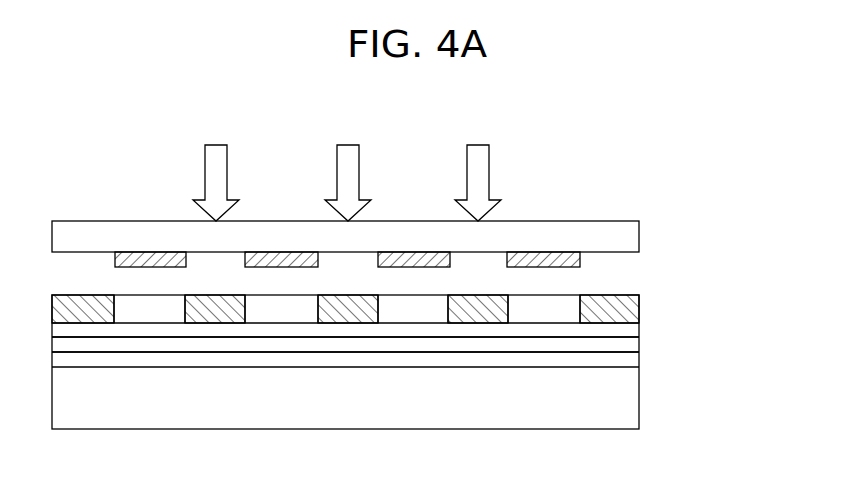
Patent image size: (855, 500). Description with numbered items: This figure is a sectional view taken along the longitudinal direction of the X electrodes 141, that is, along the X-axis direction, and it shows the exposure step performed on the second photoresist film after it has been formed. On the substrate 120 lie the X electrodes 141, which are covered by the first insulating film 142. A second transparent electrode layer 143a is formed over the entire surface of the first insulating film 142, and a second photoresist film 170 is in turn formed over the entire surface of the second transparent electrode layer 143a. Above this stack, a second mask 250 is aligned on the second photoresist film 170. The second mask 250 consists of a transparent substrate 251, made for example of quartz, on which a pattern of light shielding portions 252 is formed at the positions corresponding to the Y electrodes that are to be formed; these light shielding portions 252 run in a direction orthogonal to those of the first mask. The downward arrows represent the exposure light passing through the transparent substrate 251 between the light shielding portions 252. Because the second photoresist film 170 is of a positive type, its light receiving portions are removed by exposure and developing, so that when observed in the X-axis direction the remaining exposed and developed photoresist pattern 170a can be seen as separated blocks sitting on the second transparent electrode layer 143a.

The second mask 250 is at (412, 243).
The transparent substrate 251 is at (630, 242).
The light shielding portions 252 is at (580, 258).
The second photoresist pattern 170a is at (640, 298).
The second photoresist film 170 is at (545, 313).
The second transparent electrode layer 143a is at (628, 333).
The first insulating film 142 is at (628, 348).
The X electrodes 141 is at (628, 358).
The substrate 120 is at (627, 405).